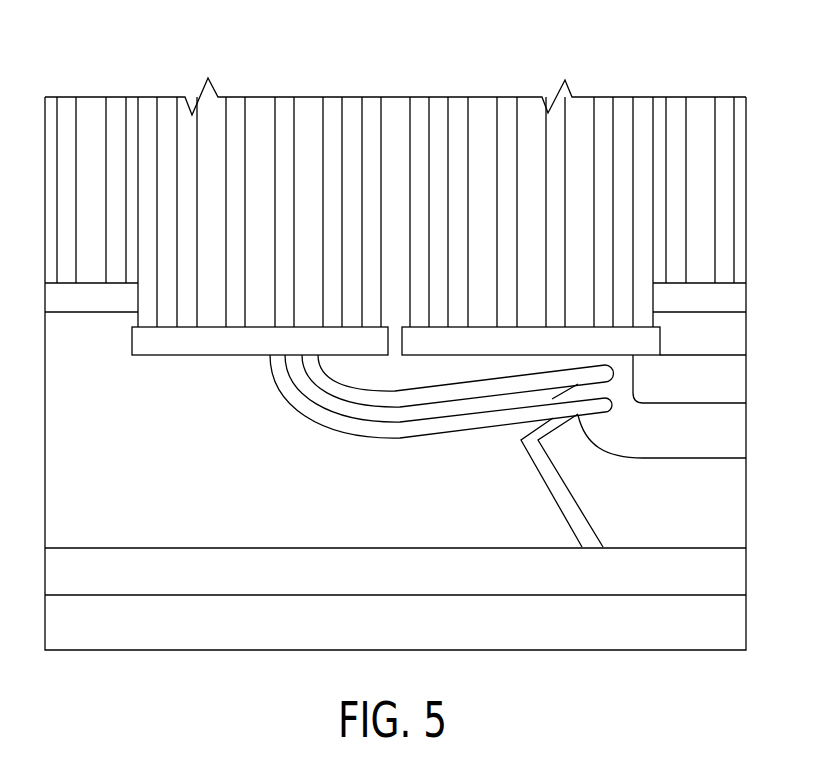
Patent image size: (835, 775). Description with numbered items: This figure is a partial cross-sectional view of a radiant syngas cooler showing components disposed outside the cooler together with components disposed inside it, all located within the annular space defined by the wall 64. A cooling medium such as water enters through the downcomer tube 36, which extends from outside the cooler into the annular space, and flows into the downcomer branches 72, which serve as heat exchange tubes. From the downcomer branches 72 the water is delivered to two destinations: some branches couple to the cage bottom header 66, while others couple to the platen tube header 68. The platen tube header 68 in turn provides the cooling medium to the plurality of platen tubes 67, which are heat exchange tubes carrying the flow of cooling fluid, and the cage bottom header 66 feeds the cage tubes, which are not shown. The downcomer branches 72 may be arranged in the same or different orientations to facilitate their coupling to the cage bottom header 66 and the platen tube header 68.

The wall 64 is at (747, 349).
The platen tubes 67 is at (60, 133).
The platen tube header 68 is at (250, 356).
The downcomer branches 72 is at (440, 437).
The downcomer tube 36 is at (713, 440).
The cage bottom header 66 is at (192, 548).